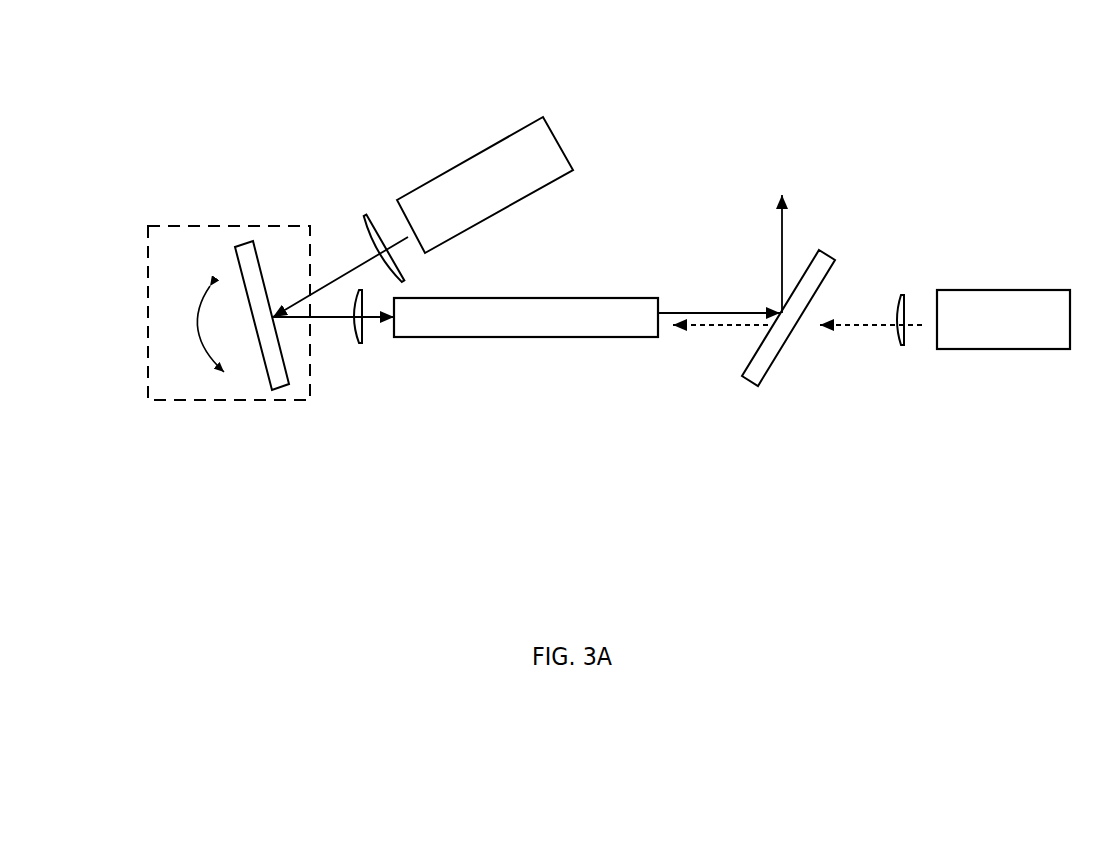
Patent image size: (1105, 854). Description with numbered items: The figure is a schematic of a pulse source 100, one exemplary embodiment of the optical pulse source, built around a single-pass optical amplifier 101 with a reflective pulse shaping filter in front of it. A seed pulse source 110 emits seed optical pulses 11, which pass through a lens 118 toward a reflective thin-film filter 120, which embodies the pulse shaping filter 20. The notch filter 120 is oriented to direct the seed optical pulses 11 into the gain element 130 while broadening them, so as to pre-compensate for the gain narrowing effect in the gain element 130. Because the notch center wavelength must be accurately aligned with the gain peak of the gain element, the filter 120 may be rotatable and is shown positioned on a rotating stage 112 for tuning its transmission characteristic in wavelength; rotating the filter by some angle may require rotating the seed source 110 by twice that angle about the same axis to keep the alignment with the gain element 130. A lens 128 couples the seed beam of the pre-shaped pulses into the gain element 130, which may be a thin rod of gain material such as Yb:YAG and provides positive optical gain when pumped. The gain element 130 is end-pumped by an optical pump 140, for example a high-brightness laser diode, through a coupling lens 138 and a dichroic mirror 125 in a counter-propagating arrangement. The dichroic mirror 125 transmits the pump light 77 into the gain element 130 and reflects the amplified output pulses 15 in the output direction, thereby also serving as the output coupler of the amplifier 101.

The pulse source 100 is at (684, 53).
The pulse shaping filter 20 is at (238, 145).
The rotating stage 112 is at (283, 225).
The reflective thin-film filter 120 is at (237, 245).
The seed pulse source 110 is at (503, 140).
The lens 118 is at (362, 217).
The seed optical pulses 11 is at (332, 318).
The lens 128 is at (357, 344).
The single-pass optical amplifier 101 is at (590, 455).
The gain element 130 is at (525, 338).
The amplified output pulses 15 is at (782, 222).
The dichroic mirror 125 is at (775, 360).
The pump light 77 is at (842, 323).
The coupling lens 138 is at (900, 293).
The optical pump 140 is at (1013, 290).